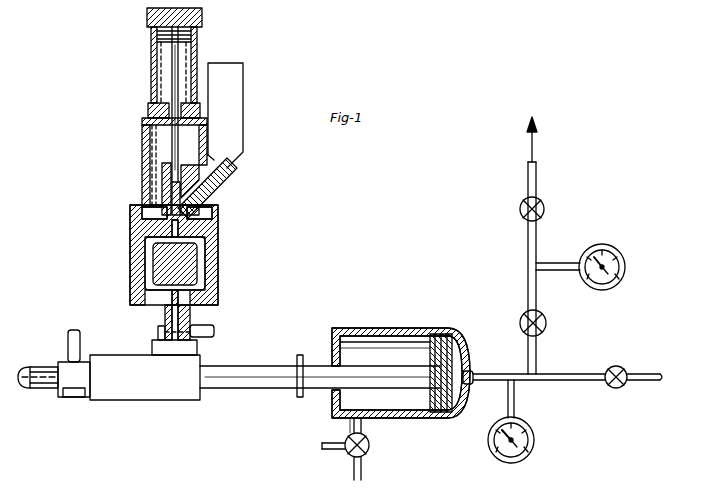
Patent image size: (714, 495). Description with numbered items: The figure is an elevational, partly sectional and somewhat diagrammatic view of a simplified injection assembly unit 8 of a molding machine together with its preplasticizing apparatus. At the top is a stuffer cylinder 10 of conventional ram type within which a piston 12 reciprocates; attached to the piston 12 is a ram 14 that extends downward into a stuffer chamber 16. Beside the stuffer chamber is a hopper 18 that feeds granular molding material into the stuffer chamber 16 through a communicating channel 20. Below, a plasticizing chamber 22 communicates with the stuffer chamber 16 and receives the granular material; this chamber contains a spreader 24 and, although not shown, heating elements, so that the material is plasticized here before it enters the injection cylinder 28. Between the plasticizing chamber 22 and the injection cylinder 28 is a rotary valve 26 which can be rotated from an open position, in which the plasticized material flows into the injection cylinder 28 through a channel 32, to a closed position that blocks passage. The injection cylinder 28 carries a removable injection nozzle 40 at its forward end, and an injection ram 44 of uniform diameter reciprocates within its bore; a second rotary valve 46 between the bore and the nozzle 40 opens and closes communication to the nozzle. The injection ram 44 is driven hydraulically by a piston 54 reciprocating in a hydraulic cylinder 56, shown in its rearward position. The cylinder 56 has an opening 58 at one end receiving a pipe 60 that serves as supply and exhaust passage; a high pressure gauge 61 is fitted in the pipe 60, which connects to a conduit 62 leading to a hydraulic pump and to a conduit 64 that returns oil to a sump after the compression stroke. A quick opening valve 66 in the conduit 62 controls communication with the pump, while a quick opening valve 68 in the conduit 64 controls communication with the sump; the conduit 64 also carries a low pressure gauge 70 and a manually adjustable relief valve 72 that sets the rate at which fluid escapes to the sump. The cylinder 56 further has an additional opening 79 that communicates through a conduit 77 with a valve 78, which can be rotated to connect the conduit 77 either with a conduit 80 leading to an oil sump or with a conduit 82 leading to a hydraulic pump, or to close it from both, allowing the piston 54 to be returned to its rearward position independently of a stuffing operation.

The injection assembly unit 8 is at (108, 241).
The stuffer cylinder 10 is at (157, 32).
The piston 12 is at (157, 41).
The ram 14 is at (172, 142).
The stuffer chamber 16 is at (178, 190).
The hopper 18 is at (238, 91).
The communicating channel 20 is at (200, 188).
The plasticizing chamber 22 is at (218, 243).
The spreader 24 is at (195, 263).
The rotary valve 26 is at (203, 330).
The injection cylinder 28 is at (148, 393).
The channel 32 is at (193, 298).
The injection nozzle 40 is at (17, 375).
The injection ram 44 is at (232, 388).
The rotary valve 46 is at (82, 337).
The piston 54 is at (438, 363).
The hydraulic cylinder 56 is at (373, 328).
The opening 58 is at (462, 382).
The pipe 60 is at (495, 377).
The high pressure gauge 61 is at (535, 440).
The conduit 62 is at (585, 381).
The conduit 64 is at (538, 352).
The quick opening valve 66 is at (623, 367).
The quick opening valve 68 is at (546, 320).
The low pressure gauge 70 is at (625, 265).
The adjustable relief valve 72 is at (544, 209).
The conduit 77 is at (353, 435).
The valve 78 is at (370, 446).
The additional opening 79 is at (359, 418).
The conduit 80 is at (335, 450).
The conduit 82 is at (363, 470).